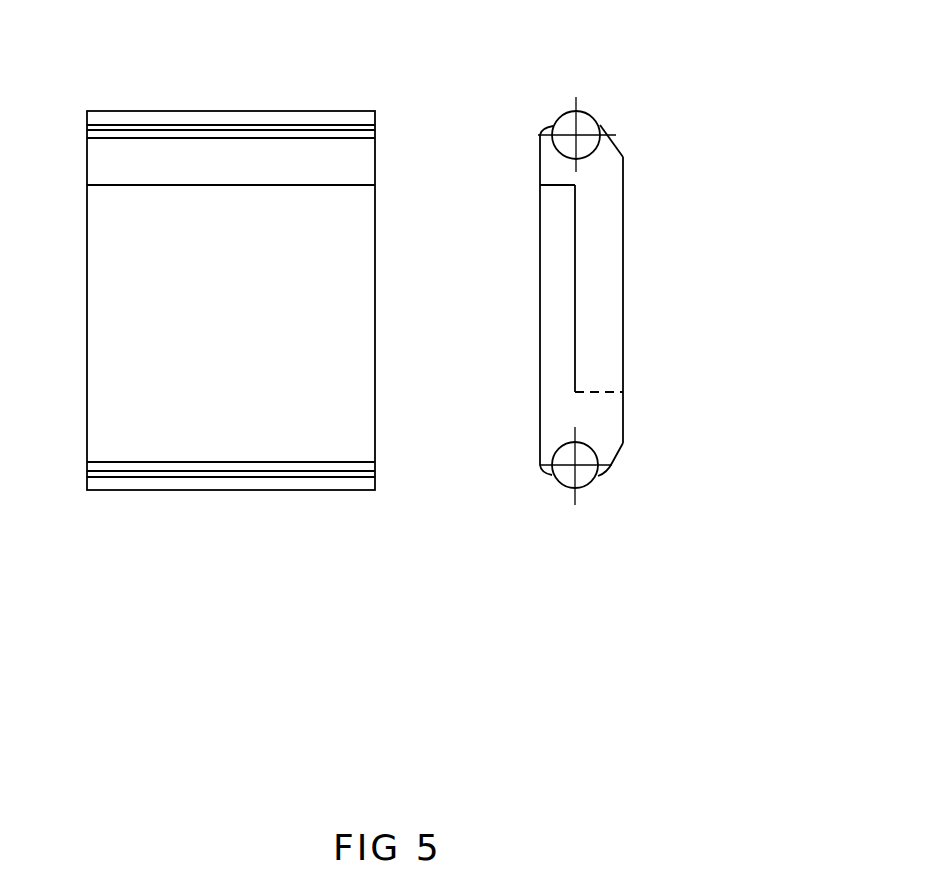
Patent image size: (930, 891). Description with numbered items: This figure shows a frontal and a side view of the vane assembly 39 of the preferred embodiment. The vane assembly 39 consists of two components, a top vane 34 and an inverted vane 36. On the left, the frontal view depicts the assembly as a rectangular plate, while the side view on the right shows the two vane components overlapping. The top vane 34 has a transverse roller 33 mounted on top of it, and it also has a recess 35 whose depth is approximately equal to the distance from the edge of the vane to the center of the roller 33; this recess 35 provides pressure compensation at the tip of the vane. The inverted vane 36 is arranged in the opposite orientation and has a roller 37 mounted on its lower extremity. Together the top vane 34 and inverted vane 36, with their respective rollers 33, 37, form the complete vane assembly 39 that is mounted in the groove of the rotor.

The transverse roller 33 is at (585, 127).
The top vane 34 is at (597, 223).
The recess 35 is at (555, 187).
The inverted vane 36 is at (572, 322).
The roller 37 is at (568, 475).
The vane assembly 39 is at (235, 437).